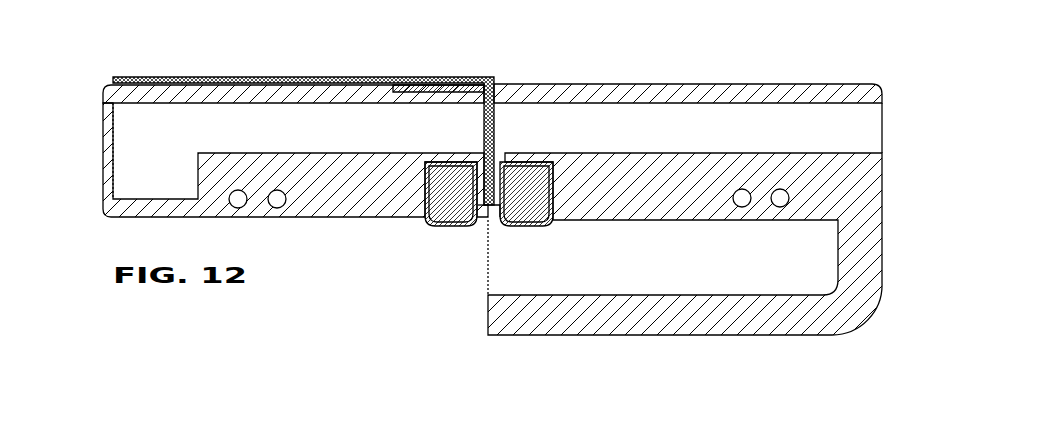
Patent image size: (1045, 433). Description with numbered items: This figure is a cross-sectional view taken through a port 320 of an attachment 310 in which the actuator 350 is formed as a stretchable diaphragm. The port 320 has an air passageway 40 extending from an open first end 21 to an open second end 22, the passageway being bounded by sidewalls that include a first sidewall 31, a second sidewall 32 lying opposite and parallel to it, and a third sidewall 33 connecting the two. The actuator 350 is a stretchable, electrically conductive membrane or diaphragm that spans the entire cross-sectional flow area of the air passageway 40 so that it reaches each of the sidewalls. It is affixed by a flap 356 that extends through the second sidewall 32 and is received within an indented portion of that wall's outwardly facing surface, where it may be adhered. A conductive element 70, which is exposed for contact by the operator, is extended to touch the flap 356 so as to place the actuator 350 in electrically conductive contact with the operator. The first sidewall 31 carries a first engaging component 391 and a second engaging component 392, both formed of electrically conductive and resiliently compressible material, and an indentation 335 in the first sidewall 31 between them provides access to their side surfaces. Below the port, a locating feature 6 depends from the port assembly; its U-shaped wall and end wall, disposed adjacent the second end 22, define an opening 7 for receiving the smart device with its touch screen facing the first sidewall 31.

The attachment 310 is at (155, 65).
The conductive element 70 is at (345, 110).
The second sidewall 32 is at (330, 88).
The flap 356 is at (450, 85).
The third sidewall 33 is at (678, 118).
The port 320 is at (865, 65).
The first end 21 is at (259, 153).
The second end 22 is at (691, 211).
The air passageway 40 is at (143, 152).
The indentation 335 is at (482, 153).
The actuator 350 is at (488, 130).
The first sidewall 31 is at (330, 185).
The first engaging component 391 is at (447, 227).
The second engaging component 392 is at (530, 227).
The opening 7 is at (513, 278).
The locating feature 6 is at (868, 322).